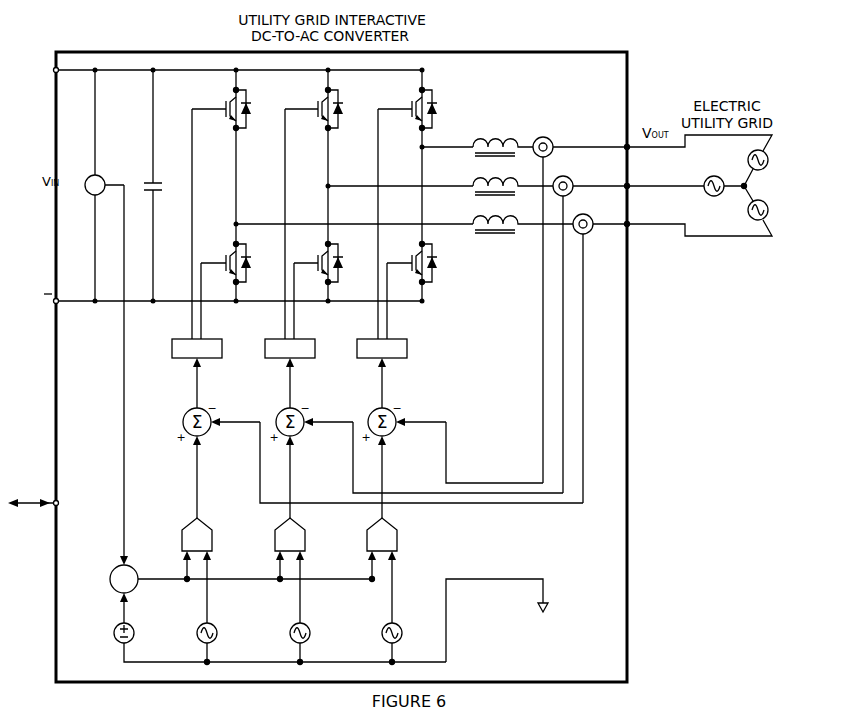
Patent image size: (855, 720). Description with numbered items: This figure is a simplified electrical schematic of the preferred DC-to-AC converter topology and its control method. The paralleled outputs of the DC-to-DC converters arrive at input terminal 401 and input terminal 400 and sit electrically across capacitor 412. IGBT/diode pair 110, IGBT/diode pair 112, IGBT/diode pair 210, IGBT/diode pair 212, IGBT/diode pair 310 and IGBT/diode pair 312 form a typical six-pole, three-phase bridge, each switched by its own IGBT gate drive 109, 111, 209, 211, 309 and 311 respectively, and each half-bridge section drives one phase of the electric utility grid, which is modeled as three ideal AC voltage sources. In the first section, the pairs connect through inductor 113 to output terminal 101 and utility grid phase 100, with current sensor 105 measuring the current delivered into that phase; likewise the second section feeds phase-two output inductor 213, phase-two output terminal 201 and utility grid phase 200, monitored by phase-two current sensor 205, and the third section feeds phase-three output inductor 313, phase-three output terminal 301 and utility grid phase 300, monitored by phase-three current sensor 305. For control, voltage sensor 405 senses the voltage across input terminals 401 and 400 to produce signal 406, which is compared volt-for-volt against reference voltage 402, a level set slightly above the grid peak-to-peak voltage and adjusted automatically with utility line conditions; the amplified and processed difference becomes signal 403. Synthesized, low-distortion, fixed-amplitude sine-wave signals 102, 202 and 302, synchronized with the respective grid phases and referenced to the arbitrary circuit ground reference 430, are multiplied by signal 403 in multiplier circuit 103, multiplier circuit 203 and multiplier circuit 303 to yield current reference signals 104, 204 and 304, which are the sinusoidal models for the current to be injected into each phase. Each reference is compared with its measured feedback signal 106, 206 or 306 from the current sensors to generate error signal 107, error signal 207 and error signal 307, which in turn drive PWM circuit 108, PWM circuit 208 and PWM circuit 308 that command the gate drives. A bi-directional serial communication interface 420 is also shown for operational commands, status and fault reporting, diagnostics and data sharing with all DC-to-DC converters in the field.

The utility grid phase 100 is at (770, 160).
The output terminal 101 is at (634, 152).
The signal V_AC1 102 is at (403, 625).
The multiplier circuit 103 is at (403, 539).
The signal I_REF1 104 is at (385, 456).
The current sensor 105 is at (552, 141).
The signal I_AC1 106 is at (413, 428).
The error signal I_ERROR1 107 is at (392, 363).
The PWM circuit 108 is at (413, 336).
The IGBT gate drive 109 is at (406, 258).
The IGBT/diode pair 110 is at (445, 258).
The IGBT gate drive 111 is at (406, 104).
The IGBT/diode pair 112 is at (445, 104).
The inductor 113 is at (471, 141).
The utility grid phase 200 is at (714, 174).
The phase 2 output terminal 201 is at (634, 191).
The signal V_AC2 202 is at (311, 625).
The multiplier circuit 203 is at (311, 539).
The signal I_REF2 204 is at (293, 456).
The phase 2 current sensor 205 is at (572, 178).
The signal I_AC2 206 is at (321, 428).
The error signal I_ERROR2 207 is at (300, 363).
The PWM circuit 208 is at (320, 336).
The IGBT gate drive 209 is at (312, 258).
The IGBT/diode pair 210 is at (351, 258).
The IGBT gate drive 211 is at (312, 104).
The IGBT/diode pair 212 is at (351, 104).
The phase 2 output inductor 213 is at (471, 180).
The utility grid phase 300 is at (770, 210).
The phase 3 output terminal 301 is at (634, 229).
The signal V_AC3 302 is at (218, 625).
The multiplier circuit 303 is at (218, 539).
The signal I_REF3 304 is at (200, 456).
The phase 3 current sensor 305 is at (592, 216).
The signal I_AC3 306 is at (228, 428).
The error signal I_ERROR3 307 is at (207, 363).
The PWM circuit 308 is at (227, 336).
The IGBT gate drive 309 is at (221, 258).
The IGBT/diode pair 310 is at (259, 258).
The IGBT gate drive 311 is at (221, 104).
The IGBT/diode pair 312 is at (259, 104).
The phase 3 output inductor 313 is at (471, 218).
The input terminal 400 is at (52, 306).
The input terminal 401 is at (52, 66).
The reference voltage V_DC REF 402 is at (134, 624).
The signal V_ERROR 403 is at (242, 565).
The voltage sensor 405 is at (106, 176).
The signal V_IN 406 is at (130, 550).
The capacitor 412 is at (162, 177).
The bi-directional serial communication interface 420 is at (52, 509).
The circuit ground reference 430 is at (558, 608).